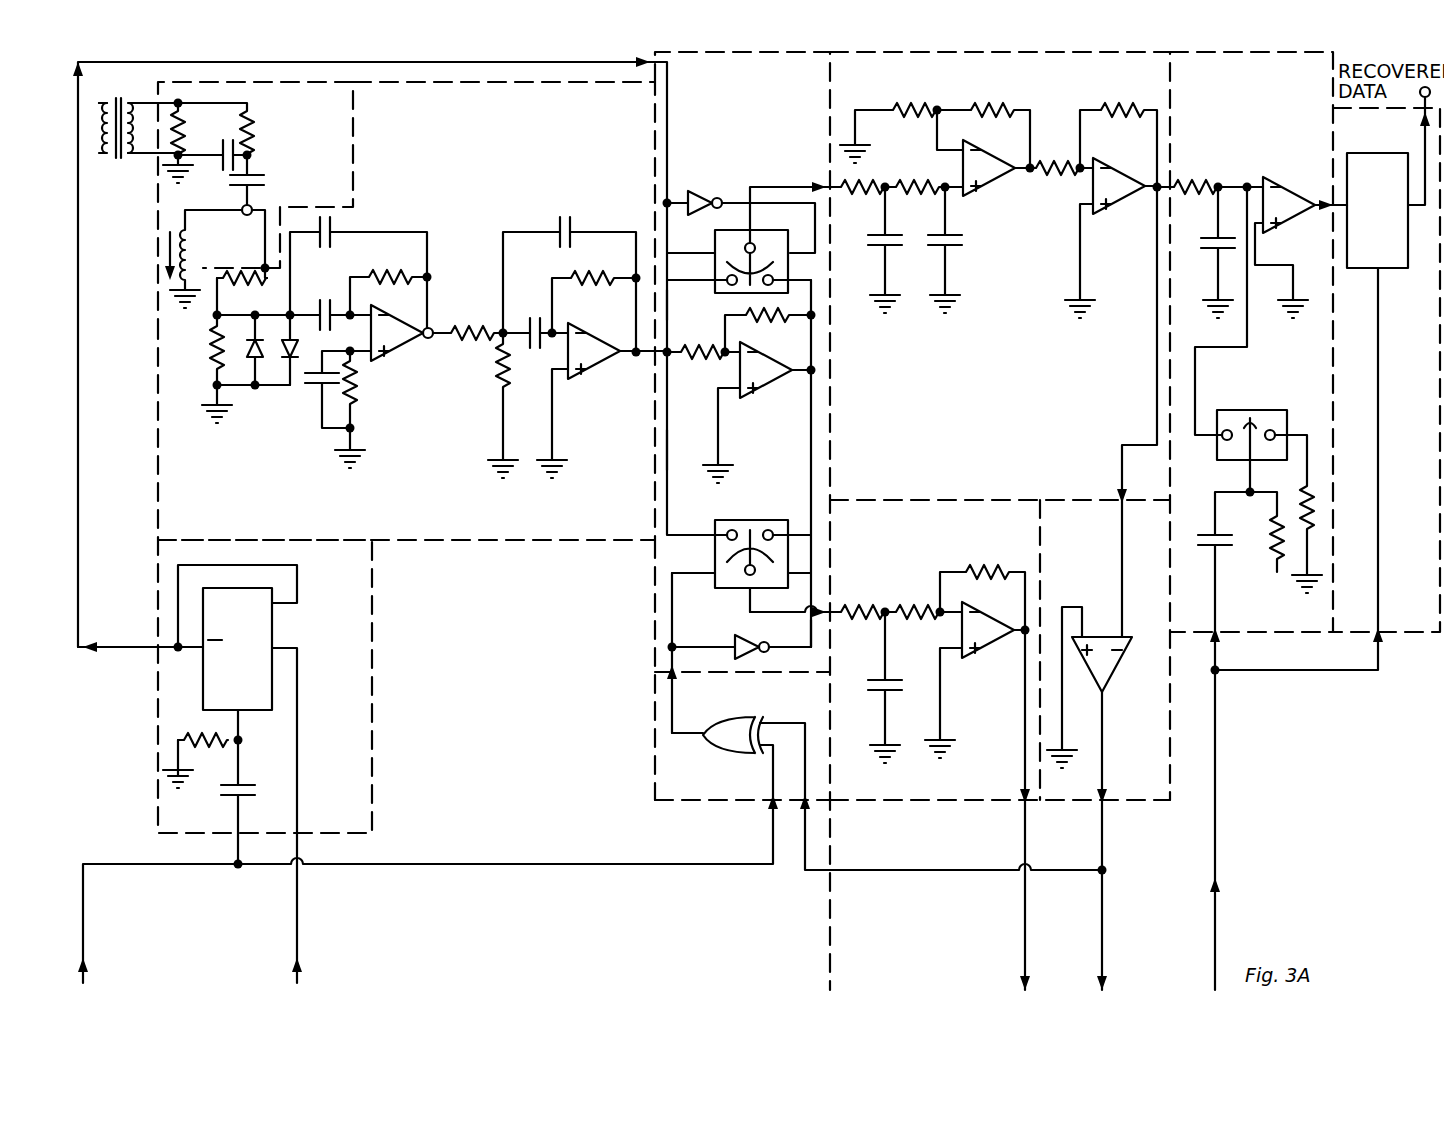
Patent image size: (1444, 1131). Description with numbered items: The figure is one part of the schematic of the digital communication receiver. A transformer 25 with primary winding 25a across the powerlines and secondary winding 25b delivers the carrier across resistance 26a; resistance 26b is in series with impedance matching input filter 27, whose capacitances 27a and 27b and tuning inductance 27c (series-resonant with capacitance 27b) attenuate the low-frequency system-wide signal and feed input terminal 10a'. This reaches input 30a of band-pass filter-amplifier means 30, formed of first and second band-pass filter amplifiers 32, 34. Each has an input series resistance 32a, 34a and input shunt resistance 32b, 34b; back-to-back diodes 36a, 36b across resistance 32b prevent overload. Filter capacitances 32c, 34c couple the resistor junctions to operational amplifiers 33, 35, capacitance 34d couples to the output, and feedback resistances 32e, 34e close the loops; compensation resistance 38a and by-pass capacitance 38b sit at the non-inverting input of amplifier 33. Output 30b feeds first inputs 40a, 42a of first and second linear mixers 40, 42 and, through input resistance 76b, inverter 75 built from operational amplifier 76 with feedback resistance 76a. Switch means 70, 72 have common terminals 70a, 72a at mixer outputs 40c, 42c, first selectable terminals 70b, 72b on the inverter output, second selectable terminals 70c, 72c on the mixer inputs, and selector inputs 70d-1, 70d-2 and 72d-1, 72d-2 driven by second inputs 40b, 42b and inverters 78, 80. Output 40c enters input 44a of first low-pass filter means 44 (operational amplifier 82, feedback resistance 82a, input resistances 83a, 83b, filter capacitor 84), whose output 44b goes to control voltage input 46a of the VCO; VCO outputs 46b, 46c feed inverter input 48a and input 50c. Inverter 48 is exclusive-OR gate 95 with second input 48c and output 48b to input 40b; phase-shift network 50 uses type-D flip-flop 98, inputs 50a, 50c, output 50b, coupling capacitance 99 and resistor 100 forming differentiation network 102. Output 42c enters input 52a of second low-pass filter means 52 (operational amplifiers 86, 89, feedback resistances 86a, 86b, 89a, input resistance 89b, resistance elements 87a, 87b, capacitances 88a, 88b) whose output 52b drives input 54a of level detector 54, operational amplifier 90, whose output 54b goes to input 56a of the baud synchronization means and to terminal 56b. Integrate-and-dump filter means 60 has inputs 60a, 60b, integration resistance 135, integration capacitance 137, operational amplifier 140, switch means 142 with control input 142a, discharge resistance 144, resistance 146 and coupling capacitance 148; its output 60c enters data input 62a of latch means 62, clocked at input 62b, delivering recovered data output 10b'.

The transformer 25 is at (114, 160).
The primary winding 25a is at (109, 102).
The secondary winding 25b is at (128, 160).
The resistance 26a is at (198, 128).
The resistance 26b is at (250, 128).
The impedance matching input filter 27 is at (340, 111).
The capacitance 27a is at (222, 162).
The capacitance 27b is at (252, 176).
The tuning inductance 27c is at (192, 258).
The input terminal 10a' is at (279, 187).
The band-pass filter-amplifier means 30 is at (422, 111).
The input of band-pass filter-amplifier means 30a is at (276, 207).
The output of band-pass filter-amplifier means 30b is at (655, 362).
The first band-pass filter amplifier 32 is at (333, 336).
The input series resistance 32a is at (255, 292).
The input shunt resistance 32b is at (212, 358).
The first filter capacitance 32c is at (320, 300).
The feedback resistance 32e is at (385, 272).
The operational amplifier 33 is at (410, 348).
The second band-pass filter amplifier 34 is at (580, 394).
The input series resistance 34a is at (465, 325).
The input shunt resistance 34b is at (500, 365).
The first filter capacitance 34c is at (530, 318).
The second filter capacitance 34d is at (560, 225).
The feedback resistance 34e is at (590, 272).
The operational amplifier 35 is at (592, 348).
The diode 36a is at (252, 375).
The diode 36b is at (287, 372).
The resistance 38a is at (355, 400).
The by-pass capacitance 38b is at (318, 390).
The first linear mixer 40 is at (762, 505).
The first input of first mixer 40a is at (690, 438).
The second input of first mixer 40b is at (678, 672).
The first mixer output 40c is at (805, 620).
The second linear mixer 42 is at (768, 128).
The first input of second mixer 42a is at (660, 300).
The second input of second mixer 42b is at (670, 70).
The second mixer output 42c is at (822, 182).
The first low-pass filter means 44 is at (882, 531).
The input of first low-pass filter 44a is at (830, 610).
The filtered output of first low-pass filter 44b is at (1020, 795).
The control voltage input of voltage-controlled oscillator 46a is at (1022, 987).
The VCO output 46b is at (85, 978).
The VCO output 46c is at (299, 978).
The inverter 48 is at (805, 701).
The first inverter input 48a is at (805, 805).
The inverter output 48b is at (674, 725).
The inverter second input 48c is at (773, 785).
The ninety-degree phase-shift network 50 is at (352, 576).
The input of phase-shift network 50a is at (235, 838).
The output of phase-shift network 50b is at (152, 652).
The input of phase-shift means 50c is at (298, 838).
The second low-pass filter means 52 is at (882, 471).
The second low-pass filter input 52a is at (828, 192).
The second low-pass filter output 52b is at (1152, 180).
The level detector 54 is at (1080, 533).
The level detector input 54a is at (1124, 515).
The level detector output 54b is at (1105, 795).
The input of baud synchronization means 56a is at (1100, 987).
The input line 56b is at (1215, 985).
The integrate-and-dump filter means 60 is at (1262, 93).
The first input of integrate-and-dump filter 60a is at (1220, 630).
The second input of integrate-and-dump filter 60b is at (1185, 180).
The integrate-and-dump filter output 60c is at (1325, 212).
The latch means 62 is at (1417, 494).
The data input of latch 62a is at (1340, 200).
The clock input of latch 62b is at (1380, 630).
The single-pole double-throw switch means 70 is at (750, 520).
The common terminal 70a is at (745, 575).
The first selectable terminal 70b is at (773, 530).
The second selectable terminal 70c is at (727, 535).
The first selector input 70d-1 is at (672, 628).
The second selector input 70d-2 is at (811, 640).
The single-pole double-throw switch means 72 is at (715, 293).
The common terminal 72a is at (753, 244).
The first selectable terminal 72b is at (760, 288).
The second selectable terminal 72c is at (718, 280).
The first selector input 72d-1 is at (672, 195).
The second selector input 72d-2 is at (770, 174).
The inverter 75 is at (752, 403).
The operational amplifier 76 is at (770, 392).
The feedback resistance 76a is at (762, 318).
The input resistance 76b is at (690, 360).
The inverter 78 is at (745, 636).
The inverter 80 is at (700, 192).
The operational amplifier 82 is at (980, 648).
The feedback resistance 82a is at (980, 568).
The input resistance 83a is at (855, 618).
The input resistance 83b is at (912, 618).
The filter capacitor 84 is at (883, 690).
The operational amplifier 86 is at (995, 180).
The feedback resistance 86a is at (985, 105).
The second feedback resistance 86b is at (895, 105).
The resistance element 87a is at (860, 182).
The resistance element 87b is at (912, 182).
The first filter capacitance 88a is at (888, 238).
The second capacitive filter element 88b is at (948, 238).
The operational amplifier 89 is at (1120, 205).
The feedback resistance 89a is at (1118, 105).
The input resistance 89b is at (1052, 160).
The operational amplifier 90 is at (1112, 672).
The two-input exclusive-OR gate 95 is at (715, 750).
The type-D flip-flop logic element 98 is at (275, 630).
The coupling capacitance 99 is at (243, 792).
The resistor 100 is at (215, 745).
The differentiation network 102 is at (174, 795).
The recovered data output 10b' is at (1402, 146).
The integration resistance 135 is at (1208, 182).
The integration capacitance 137 is at (1215, 250).
The operational amplifier 140 is at (1290, 190).
The single-pole single-throw switch means 142 is at (1255, 410).
The switch means control input 142a is at (1245, 470).
The discharge resistance 144 is at (1307, 470).
The resistance 146 is at (1270, 545).
The coupling capacitance 148 is at (1212, 545).